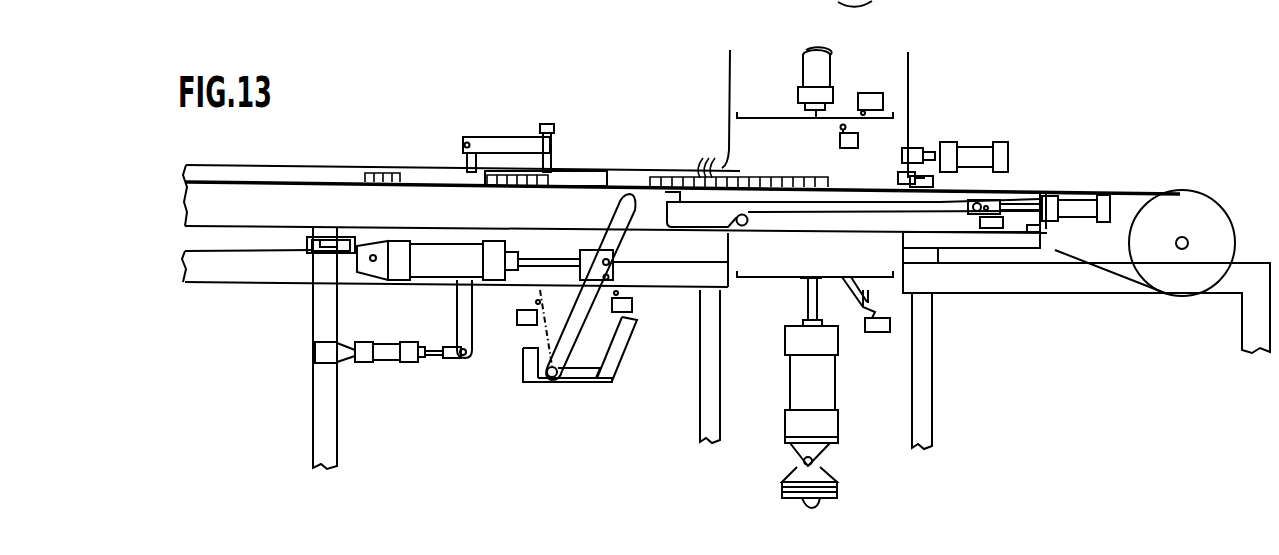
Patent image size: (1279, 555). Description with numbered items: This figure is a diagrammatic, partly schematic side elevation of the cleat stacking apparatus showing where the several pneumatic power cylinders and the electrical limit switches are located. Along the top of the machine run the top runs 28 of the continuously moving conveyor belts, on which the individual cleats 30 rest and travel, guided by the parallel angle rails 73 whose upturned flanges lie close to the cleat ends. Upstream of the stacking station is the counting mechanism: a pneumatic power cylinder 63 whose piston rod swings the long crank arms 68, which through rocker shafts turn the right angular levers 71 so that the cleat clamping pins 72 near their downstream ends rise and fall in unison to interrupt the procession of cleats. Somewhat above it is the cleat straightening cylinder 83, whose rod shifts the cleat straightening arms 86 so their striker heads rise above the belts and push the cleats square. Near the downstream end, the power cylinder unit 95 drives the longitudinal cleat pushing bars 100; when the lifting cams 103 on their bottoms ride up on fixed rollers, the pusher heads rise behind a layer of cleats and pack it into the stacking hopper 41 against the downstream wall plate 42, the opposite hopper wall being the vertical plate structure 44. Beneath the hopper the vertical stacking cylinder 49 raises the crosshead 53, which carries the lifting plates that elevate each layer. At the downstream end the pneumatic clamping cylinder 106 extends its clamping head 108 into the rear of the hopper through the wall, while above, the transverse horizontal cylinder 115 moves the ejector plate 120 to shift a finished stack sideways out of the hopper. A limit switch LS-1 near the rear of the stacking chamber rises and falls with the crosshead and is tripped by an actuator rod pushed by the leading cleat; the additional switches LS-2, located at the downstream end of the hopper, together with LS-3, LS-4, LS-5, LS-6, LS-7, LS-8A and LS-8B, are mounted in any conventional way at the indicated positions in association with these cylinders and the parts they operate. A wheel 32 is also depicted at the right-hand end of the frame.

The angle rails 73 is at (246, 165).
The top runs of conveyor belts 28 is at (290, 182).
The pneumatic power cylinder 83 is at (449, 244).
The right angular levers 71 is at (512, 140).
The cleat clamping pins 72 is at (553, 165).
The cleat straightening arms 86 is at (615, 232).
The crank arms 68 is at (457, 301).
The pneumatic power cylinder 63 is at (389, 355).
The limit switch LS-5 is at (525, 325).
The limit switch LS-4 is at (632, 305).
The lifting cams 103 is at (707, 226).
The cleat pushing bars 100 is at (805, 213).
The vertical plate structure 44 is at (728, 112).
The stacking chamber or hopper 41 is at (727, 72).
The downstream wall member or plate 42 is at (909, 56).
The cleats 30 is at (695, 157).
The ejector or pusher plate 120 is at (775, 117).
The transverse horizontal pneumatic power cylinder 115 is at (803, 62).
The limit switch LS-8A is at (871, 85).
The limit switch LS-8B is at (892, 80).
The limit switch LS-7 is at (840, 141).
The cleat stack clamping plunger or head 108 is at (932, 148).
The pneumatic clamping cylinder 106 is at (972, 146).
The limit switch LS-2 is at (898, 172).
The limit switch LS-1 is at (935, 182).
The limit switch LS-3 is at (997, 215).
The power cylinder unit 95 is at (1082, 215).
The wheel 32 is at (1212, 212).
The crosshead 53 is at (785, 278).
The vertical stacking cylinder 49 is at (790, 383).
The limit switch LS-6 is at (872, 333).